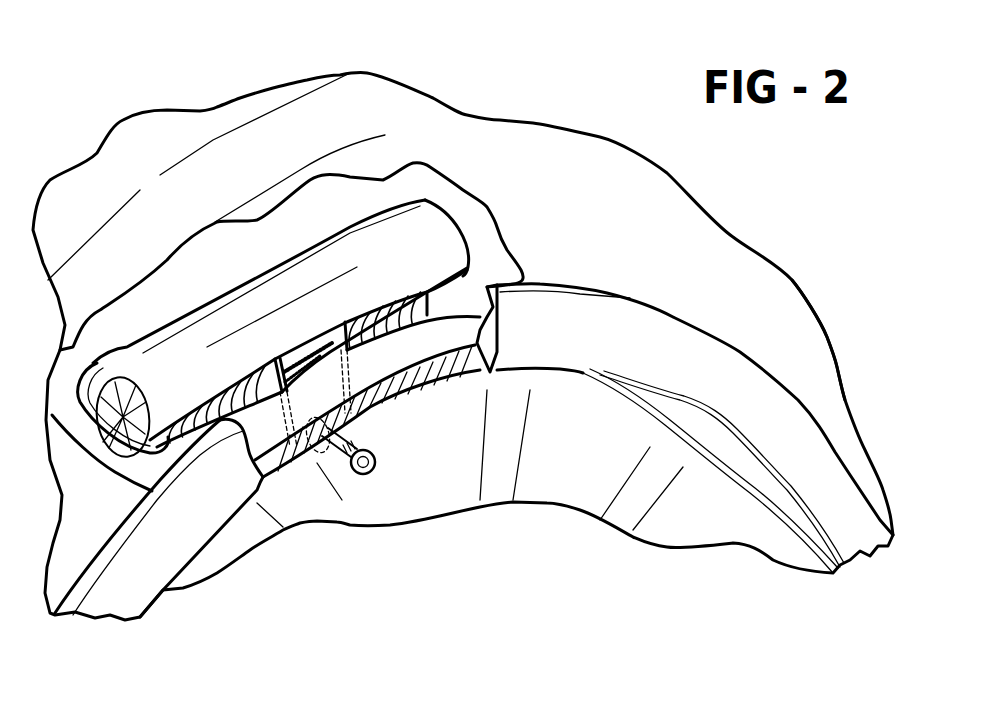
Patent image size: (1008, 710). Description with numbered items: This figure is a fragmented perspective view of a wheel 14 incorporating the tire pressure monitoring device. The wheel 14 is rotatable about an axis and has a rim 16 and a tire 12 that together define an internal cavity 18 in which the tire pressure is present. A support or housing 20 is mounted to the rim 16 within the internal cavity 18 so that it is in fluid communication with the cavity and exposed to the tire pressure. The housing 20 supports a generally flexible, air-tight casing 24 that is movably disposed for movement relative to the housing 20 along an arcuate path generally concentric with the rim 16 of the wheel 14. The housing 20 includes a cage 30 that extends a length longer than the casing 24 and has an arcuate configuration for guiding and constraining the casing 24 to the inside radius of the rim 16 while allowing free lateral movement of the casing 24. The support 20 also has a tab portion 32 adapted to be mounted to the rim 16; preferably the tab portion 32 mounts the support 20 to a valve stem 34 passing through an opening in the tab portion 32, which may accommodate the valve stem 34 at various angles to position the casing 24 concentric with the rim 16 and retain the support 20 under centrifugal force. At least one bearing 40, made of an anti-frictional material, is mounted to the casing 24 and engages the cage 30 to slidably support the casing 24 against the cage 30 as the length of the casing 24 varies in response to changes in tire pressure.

The tire 12 is at (243, 158).
The wheel 14 is at (837, 367).
The rim 16 is at (193, 518).
The internal cavity 18 is at (197, 262).
The support or housing 20 is at (345, 243).
The casing 24 is at (379, 322).
The cage 30 is at (393, 240).
The tab portion 32 is at (312, 352).
The valve stem 34 is at (375, 465).
The bearing 40 is at (523, 270).